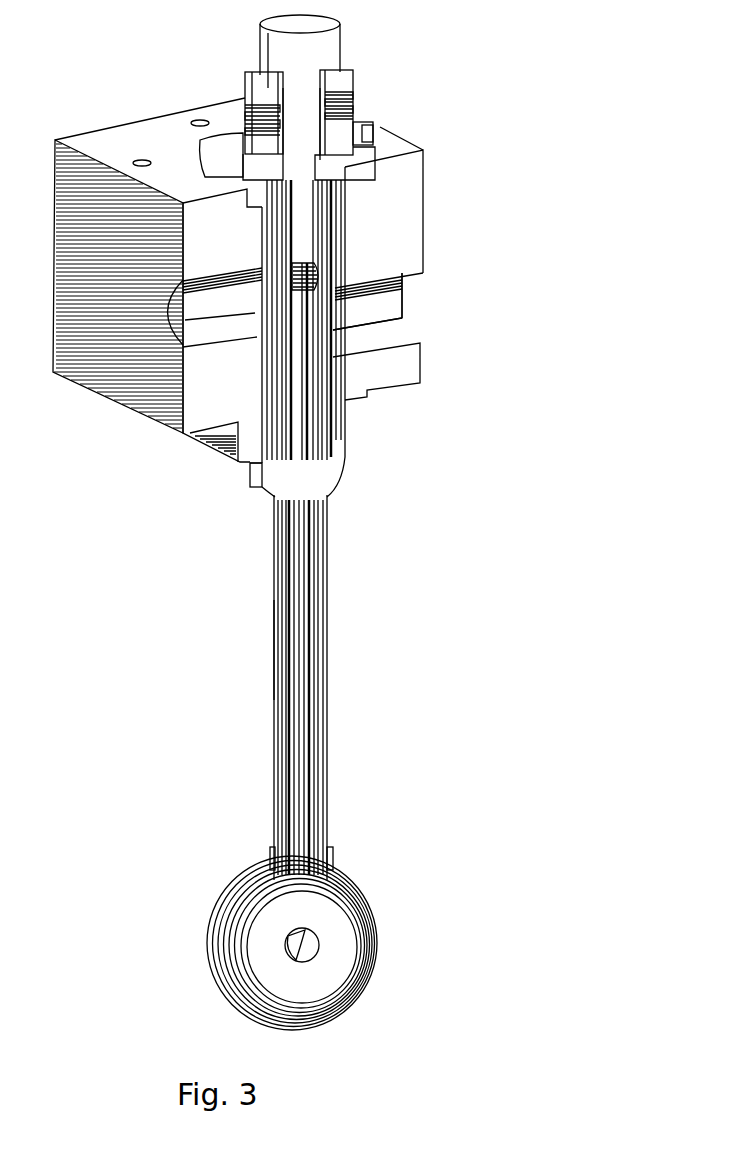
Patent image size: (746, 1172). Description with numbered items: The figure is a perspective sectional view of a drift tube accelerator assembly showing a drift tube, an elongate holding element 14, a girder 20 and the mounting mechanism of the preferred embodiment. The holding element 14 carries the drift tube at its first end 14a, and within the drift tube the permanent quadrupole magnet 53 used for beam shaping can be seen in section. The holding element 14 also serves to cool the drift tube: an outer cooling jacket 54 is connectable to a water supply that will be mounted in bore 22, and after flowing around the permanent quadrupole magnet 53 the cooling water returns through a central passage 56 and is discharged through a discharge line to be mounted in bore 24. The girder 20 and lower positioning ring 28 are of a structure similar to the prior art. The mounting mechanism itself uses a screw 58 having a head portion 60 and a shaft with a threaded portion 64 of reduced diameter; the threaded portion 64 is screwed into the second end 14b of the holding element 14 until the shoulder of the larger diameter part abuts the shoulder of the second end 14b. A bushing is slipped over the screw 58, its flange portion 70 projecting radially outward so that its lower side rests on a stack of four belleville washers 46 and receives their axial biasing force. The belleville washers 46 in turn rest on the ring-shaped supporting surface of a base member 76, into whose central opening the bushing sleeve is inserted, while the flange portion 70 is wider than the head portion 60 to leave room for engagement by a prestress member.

The holding element 14 is at (338, 644).
The first end of the holding element 14a is at (341, 832).
The second end of the holding element 14b is at (357, 479).
The girder 20 is at (103, 140).
The bore 22 is at (402, 326).
The bore 24 is at (168, 322).
The lower positioning ring 28 is at (352, 445).
The belleville washers 46 is at (355, 97).
The permanent quadrupole magnet 53 is at (310, 980).
The outer cooling jacket 54 is at (316, 733).
The central passage 56 is at (300, 667).
The screw 58 is at (243, 47).
The head portion 60 is at (332, 56).
The threaded portion 64 is at (303, 223).
The flange portion 70 is at (243, 96).
The base member 76 is at (362, 124).